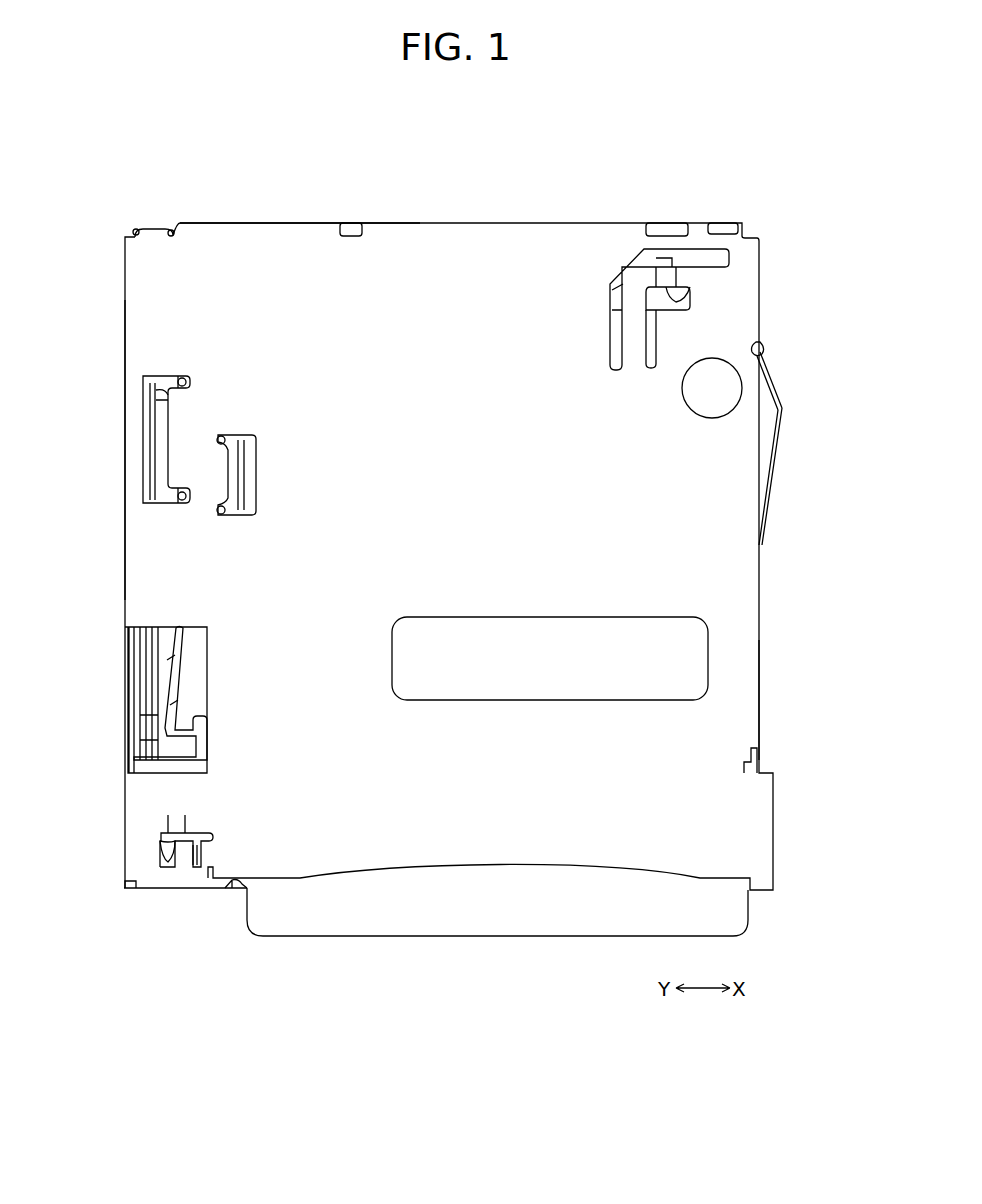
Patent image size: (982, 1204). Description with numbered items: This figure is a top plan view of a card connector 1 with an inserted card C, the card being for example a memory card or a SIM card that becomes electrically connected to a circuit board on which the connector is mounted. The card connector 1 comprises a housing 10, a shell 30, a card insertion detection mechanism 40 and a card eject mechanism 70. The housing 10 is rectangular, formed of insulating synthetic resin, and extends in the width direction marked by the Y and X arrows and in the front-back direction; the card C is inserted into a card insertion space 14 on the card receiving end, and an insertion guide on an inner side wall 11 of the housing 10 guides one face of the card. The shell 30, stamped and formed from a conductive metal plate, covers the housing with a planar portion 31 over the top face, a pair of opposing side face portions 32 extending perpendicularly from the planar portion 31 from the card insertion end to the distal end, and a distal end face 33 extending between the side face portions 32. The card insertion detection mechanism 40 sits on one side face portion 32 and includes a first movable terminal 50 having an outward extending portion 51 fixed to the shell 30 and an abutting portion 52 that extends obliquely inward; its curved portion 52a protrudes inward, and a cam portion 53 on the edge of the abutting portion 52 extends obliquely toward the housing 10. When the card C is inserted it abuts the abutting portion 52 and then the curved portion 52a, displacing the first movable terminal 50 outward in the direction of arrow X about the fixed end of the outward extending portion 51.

The card connector 1 is at (745, 166).
The housing 10 is at (202, 880).
The inner side wall 11 is at (188, 885).
The card insertion space 14 is at (240, 888).
The shell 30 is at (560, 214).
The planar portion 31 is at (745, 608).
The side face portion 32 is at (124, 582).
The distal end face 33 is at (236, 222).
The card insertion detection mechanism 40 is at (766, 353).
The first movable terminal 50 is at (790, 432).
The outward extending portion 51 is at (784, 462).
The abutting portion 52 is at (763, 398).
The curved portion 52a is at (760, 338).
The cam portion 53 is at (757, 408).
The card eject mechanism 70 is at (148, 750).
The card C is at (437, 930).